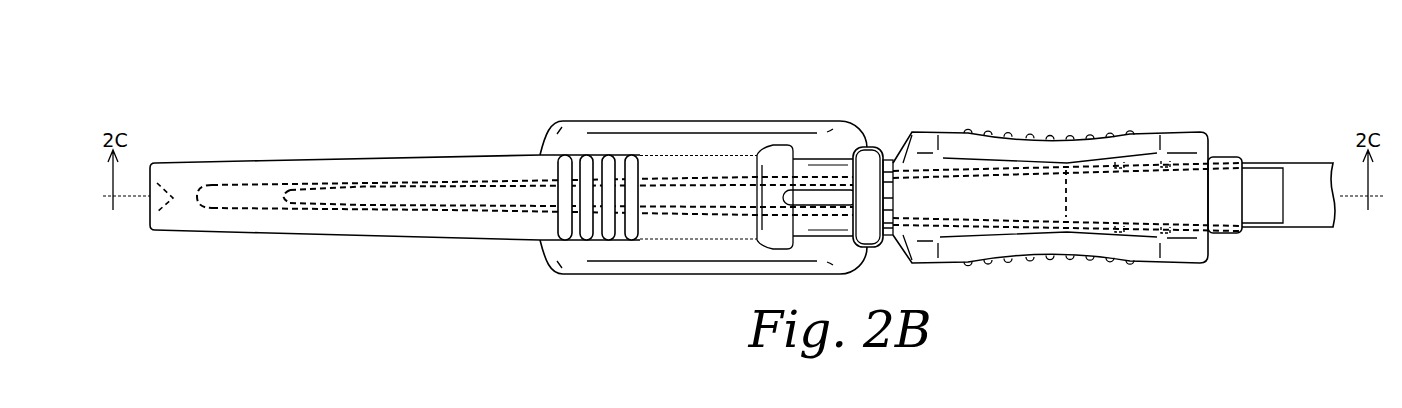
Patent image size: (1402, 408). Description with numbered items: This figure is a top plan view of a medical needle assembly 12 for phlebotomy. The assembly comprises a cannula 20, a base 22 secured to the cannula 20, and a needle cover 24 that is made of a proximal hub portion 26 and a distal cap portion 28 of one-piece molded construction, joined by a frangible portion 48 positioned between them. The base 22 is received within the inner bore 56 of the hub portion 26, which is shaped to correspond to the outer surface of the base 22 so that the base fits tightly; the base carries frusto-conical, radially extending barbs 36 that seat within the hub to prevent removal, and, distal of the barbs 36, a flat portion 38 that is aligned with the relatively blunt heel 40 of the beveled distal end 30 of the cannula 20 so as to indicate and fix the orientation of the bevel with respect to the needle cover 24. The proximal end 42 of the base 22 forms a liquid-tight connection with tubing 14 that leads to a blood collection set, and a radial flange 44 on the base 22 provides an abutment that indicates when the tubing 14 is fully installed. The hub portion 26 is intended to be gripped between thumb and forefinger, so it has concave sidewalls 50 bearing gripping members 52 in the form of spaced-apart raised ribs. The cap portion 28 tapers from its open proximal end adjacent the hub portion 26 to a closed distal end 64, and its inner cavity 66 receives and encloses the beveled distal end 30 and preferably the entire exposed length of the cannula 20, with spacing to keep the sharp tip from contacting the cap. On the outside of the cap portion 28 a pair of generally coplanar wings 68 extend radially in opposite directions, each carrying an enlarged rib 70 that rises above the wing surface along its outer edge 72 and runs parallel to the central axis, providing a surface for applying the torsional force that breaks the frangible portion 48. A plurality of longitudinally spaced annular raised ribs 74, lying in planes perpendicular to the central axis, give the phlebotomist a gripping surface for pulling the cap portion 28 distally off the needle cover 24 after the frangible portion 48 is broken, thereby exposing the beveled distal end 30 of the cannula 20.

The medical needle assembly 12 is at (438, 78).
The tubing 14 is at (1307, 162).
The cannula 20 is at (416, 200).
The base 22 is at (987, 205).
The needle cover 24 is at (669, 287).
The hub portion 26 is at (1183, 140).
The cap portion 28 is at (190, 172).
The beveled distal end 30 is at (280, 193).
The barbs 36 is at (1157, 240).
The flat portion 38 is at (1017, 182).
The heel 40 is at (382, 195).
The proximal end 42 is at (1272, 205).
The radial flange 44 is at (1222, 153).
The frangible portion 48 is at (892, 162).
The concave sidewalls 50 is at (1055, 157).
The gripping members 52 is at (1095, 132).
The inner bore 56 is at (953, 165).
The closed distal end 64 is at (168, 220).
The inner cavity 66 is at (227, 198).
The wing 68 is at (618, 252).
The enlarged rib 70 is at (642, 127).
The outer edge 72 is at (553, 137).
The annular raised ribs 74 is at (562, 222).